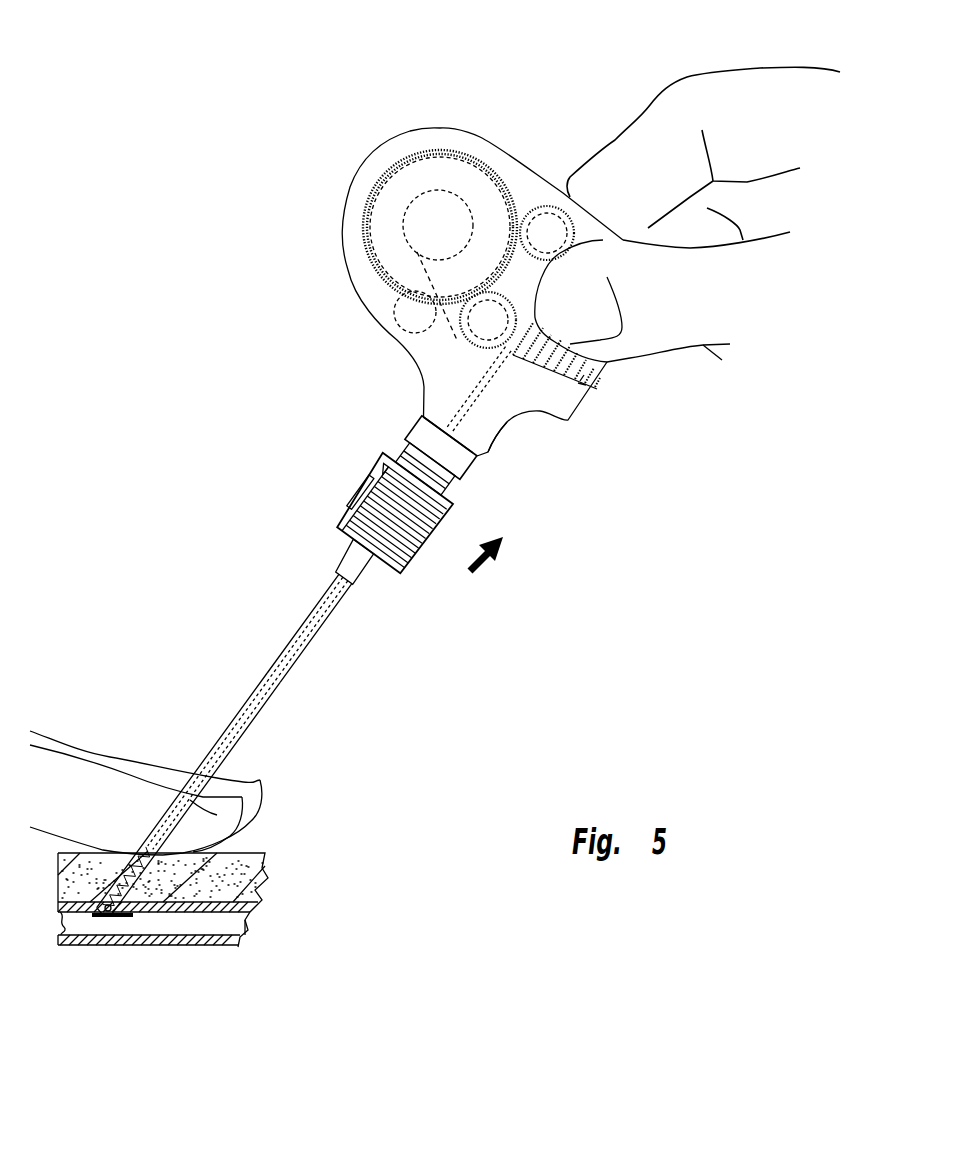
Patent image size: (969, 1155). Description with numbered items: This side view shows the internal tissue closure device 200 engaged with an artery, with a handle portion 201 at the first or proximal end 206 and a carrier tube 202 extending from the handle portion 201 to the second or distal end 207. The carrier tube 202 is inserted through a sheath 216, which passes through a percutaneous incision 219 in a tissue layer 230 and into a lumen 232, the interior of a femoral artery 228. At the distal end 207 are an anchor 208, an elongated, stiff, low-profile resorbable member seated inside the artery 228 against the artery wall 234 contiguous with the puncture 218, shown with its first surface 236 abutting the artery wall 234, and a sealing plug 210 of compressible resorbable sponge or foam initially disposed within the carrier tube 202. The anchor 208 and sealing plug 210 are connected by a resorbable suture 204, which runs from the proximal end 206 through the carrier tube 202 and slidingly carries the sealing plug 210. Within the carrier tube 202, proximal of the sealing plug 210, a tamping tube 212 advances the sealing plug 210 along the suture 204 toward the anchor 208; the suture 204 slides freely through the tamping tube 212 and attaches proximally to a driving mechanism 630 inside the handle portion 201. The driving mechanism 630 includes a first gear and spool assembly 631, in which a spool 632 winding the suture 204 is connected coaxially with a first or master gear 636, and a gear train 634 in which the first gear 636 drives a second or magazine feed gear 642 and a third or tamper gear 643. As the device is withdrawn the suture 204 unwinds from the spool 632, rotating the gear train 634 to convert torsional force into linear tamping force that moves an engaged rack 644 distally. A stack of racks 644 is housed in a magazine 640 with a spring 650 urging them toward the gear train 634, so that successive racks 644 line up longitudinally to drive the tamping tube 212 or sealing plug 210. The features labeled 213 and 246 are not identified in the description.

The internal tissue closure device 200 is at (160, 128).
The handle portion 201 is at (445, 128).
The carrier tube 202 is at (341, 549).
The suture 204 is at (458, 360).
The first or proximal end 206 is at (513, 440).
The second or distal end 207 is at (139, 808).
The anchor 208 is at (122, 918).
The sealing plug 210 is at (106, 913).
The tamping tube 212 is at (290, 642).
The wound edge 213 is at (262, 795).
The sheath 216 is at (333, 614).
The puncture 218 is at (97, 910).
The percutaneous incision 219 is at (232, 839).
The femoral artery 228 is at (250, 907).
The tissue layer 230 is at (253, 853).
The lumen 232 is at (237, 928).
The artery wall 234 is at (193, 907).
The first surface 236 is at (87, 915).
The idler gear 246 is at (485, 312).
The driving mechanism 630 is at (345, 210).
The first gear and spool assembly 631 is at (355, 258).
The spool 632 is at (433, 197).
The gear train 634 is at (440, 343).
The first or master gear 636 is at (380, 168).
The magazine 640 is at (555, 372).
The second or magazine feed gear 642 is at (537, 206).
The third or tamper gear 643 is at (460, 340).
The racks 644 is at (513, 363).
The spring 650 is at (600, 318).